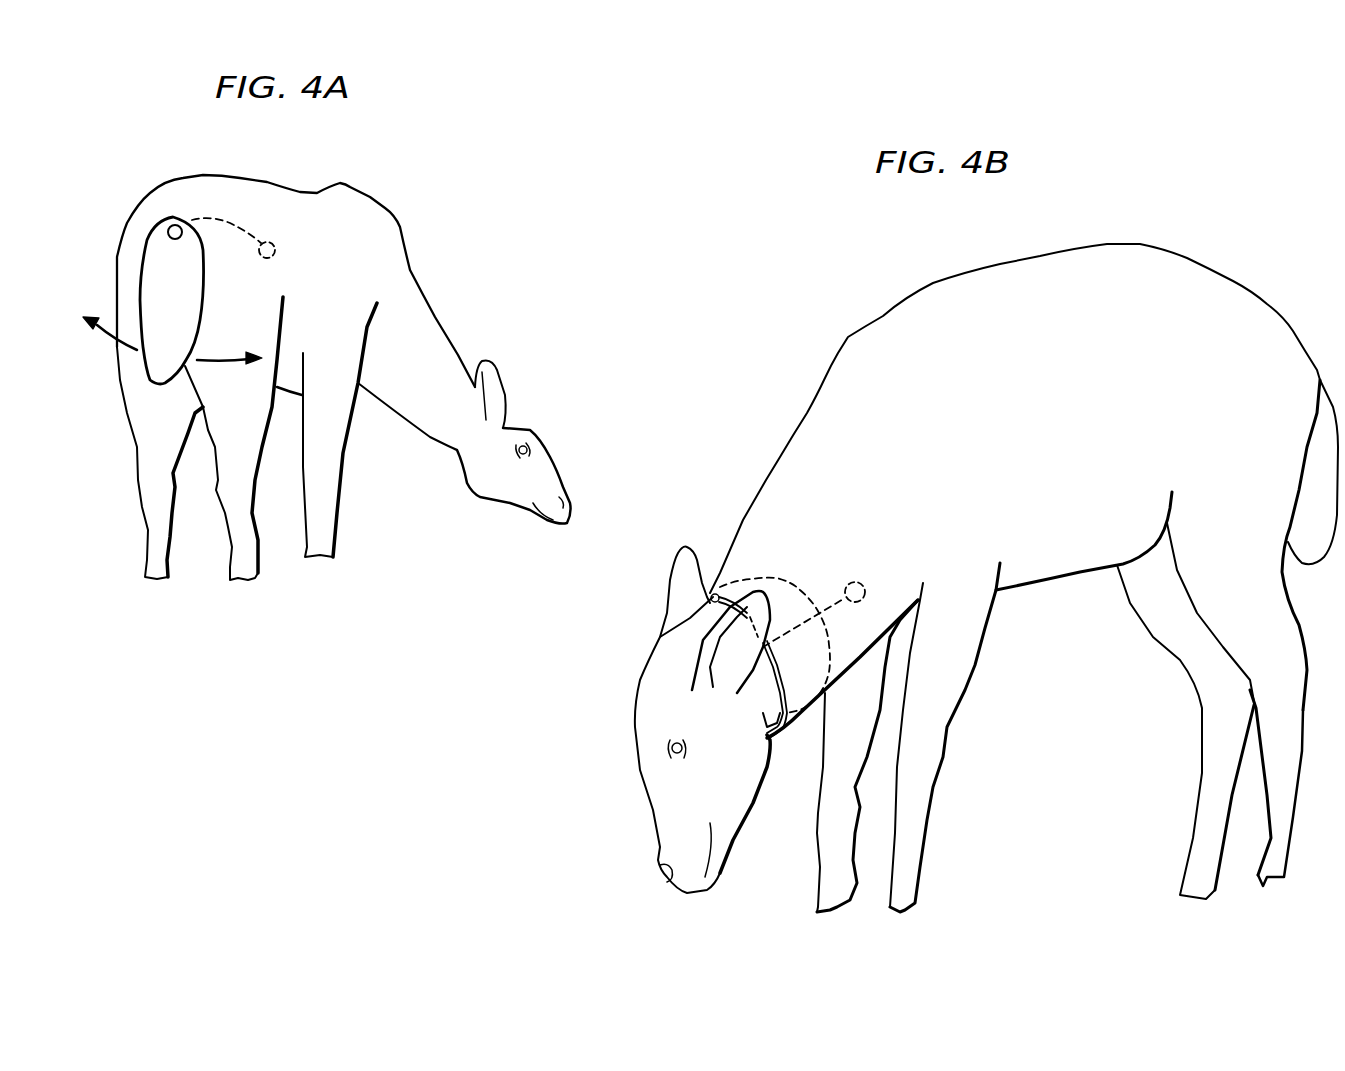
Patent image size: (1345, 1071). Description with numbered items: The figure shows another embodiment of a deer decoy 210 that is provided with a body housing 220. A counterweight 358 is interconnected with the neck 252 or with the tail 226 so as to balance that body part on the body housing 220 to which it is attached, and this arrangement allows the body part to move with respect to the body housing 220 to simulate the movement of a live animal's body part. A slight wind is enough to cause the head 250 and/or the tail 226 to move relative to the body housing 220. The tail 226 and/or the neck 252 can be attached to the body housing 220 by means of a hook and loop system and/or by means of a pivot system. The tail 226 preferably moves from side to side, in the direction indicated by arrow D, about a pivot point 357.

In FIG. 4A, the deer decoy 210 is at (420, 218).
In FIG. 4B, the deer decoy 210 is at (806, 375).
In FIG. 4A, the body housing 220 is at (387, 203).
In FIG. 4B, the body housing 220 is at (1230, 277).
In FIG. 4A, the tail 226 is at (140, 290).
In FIG. 4A, the pivot point 357 is at (174, 226).
In FIG. 4A, the counterweight 358 is at (275, 252).
In FIG. 4B, the counterweight 358 is at (866, 590).
In FIG. 4B, the head 250 is at (633, 703).
In FIG. 4B, the neck 252 is at (716, 590).